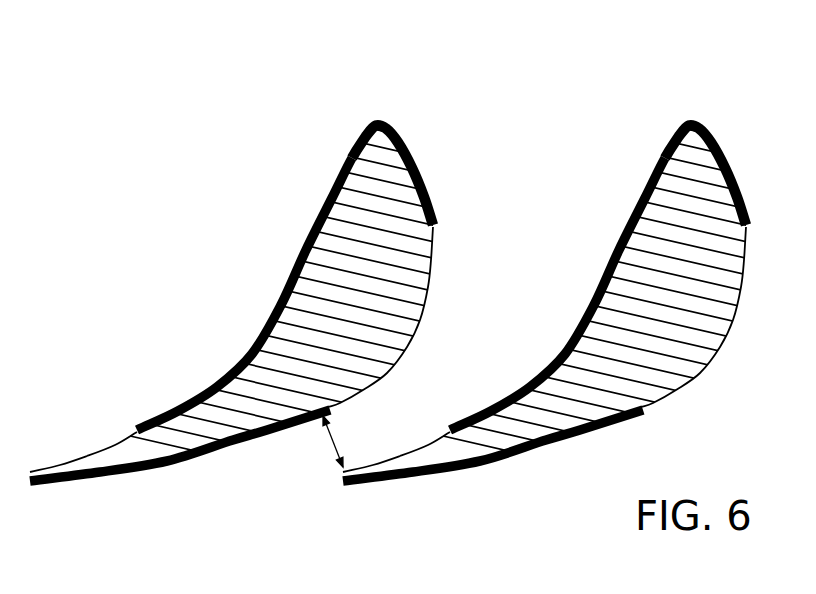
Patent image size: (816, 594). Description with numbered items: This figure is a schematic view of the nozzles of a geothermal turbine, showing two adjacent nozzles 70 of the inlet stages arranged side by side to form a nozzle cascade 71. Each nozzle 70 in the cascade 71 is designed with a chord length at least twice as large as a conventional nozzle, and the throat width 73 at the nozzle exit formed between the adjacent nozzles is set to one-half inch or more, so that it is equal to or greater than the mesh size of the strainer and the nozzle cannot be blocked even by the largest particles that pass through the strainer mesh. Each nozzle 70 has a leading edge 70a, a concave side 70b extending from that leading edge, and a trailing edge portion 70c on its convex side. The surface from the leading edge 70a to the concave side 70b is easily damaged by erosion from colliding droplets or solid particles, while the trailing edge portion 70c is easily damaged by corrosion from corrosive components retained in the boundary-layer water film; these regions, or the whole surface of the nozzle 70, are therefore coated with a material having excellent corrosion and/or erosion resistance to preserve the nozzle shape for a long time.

The nozzle 70 is at (410, 294).
The leading edge 70a is at (378, 120).
The concave side 70b is at (283, 286).
The trailing edge portion of the convex side 70c is at (219, 455).
The nozzle cascade 71 is at (536, 107).
The throat width 73 is at (340, 440).